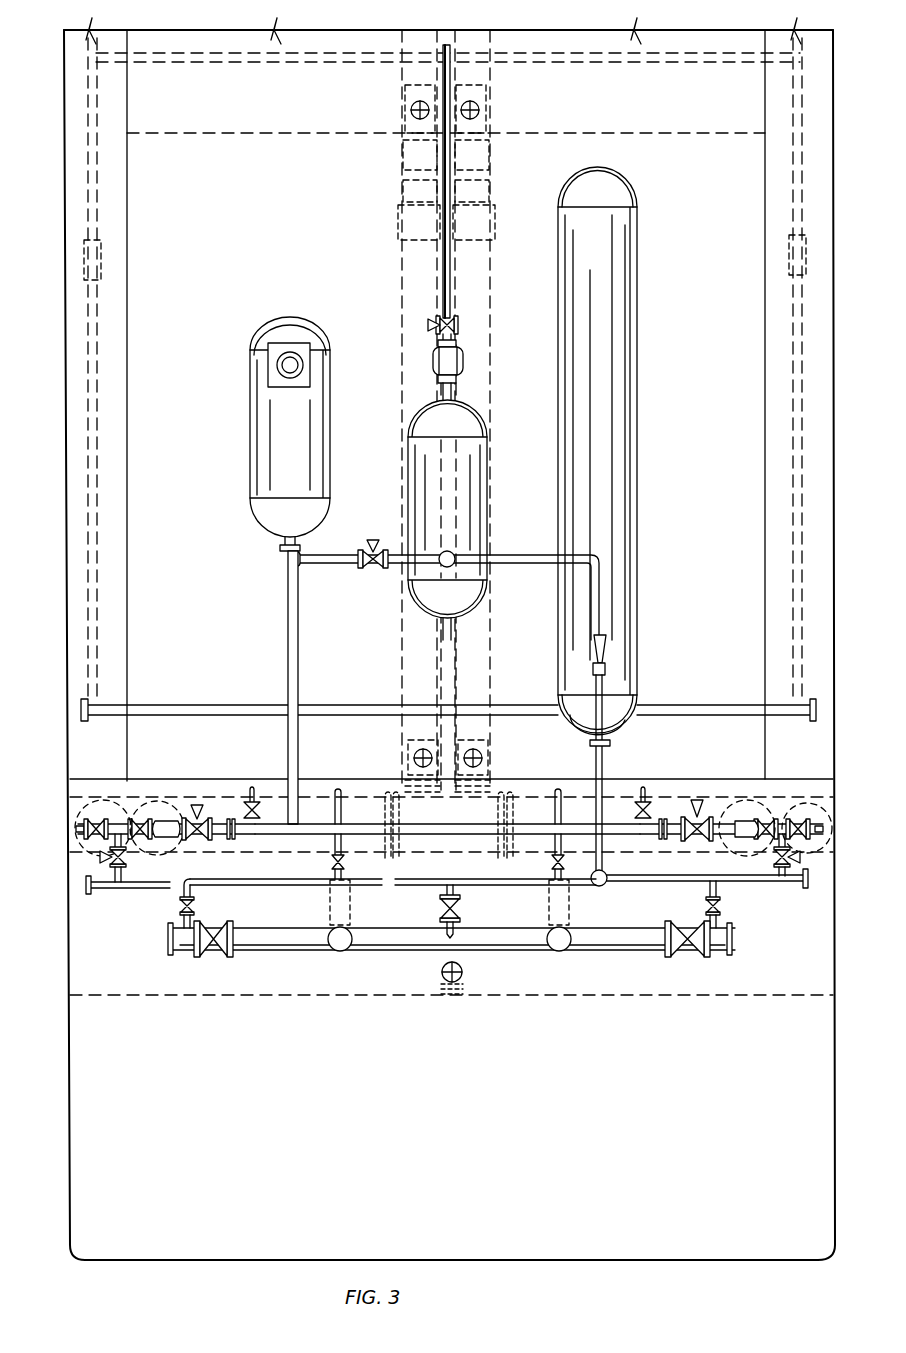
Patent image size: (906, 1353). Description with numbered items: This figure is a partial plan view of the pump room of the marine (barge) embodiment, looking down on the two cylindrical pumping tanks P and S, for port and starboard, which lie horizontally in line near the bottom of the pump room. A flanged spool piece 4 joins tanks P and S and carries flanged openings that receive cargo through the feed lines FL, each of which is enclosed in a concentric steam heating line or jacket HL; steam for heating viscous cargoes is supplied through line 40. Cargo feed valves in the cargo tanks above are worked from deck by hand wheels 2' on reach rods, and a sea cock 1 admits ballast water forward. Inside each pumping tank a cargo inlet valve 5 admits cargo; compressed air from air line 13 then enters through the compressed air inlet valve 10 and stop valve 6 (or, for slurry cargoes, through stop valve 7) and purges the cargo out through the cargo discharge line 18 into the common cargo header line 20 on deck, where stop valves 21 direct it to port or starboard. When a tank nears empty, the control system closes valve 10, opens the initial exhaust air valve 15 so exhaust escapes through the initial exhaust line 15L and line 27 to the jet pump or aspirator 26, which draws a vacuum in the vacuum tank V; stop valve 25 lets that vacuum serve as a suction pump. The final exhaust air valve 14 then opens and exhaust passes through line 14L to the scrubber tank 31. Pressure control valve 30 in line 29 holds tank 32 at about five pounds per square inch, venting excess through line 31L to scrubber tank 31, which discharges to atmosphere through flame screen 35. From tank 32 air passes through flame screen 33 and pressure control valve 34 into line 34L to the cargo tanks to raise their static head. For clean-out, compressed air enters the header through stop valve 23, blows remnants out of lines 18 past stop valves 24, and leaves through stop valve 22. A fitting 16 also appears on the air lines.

The sea cock 1 is at (461, 976).
The hand wheel 2' is at (443, 427).
The flanged spool piece 4 is at (113, 967).
The cargo inlet valve 5 is at (822, 372).
The stop valve 6 is at (137, 816).
The stop valve 7 is at (93, 818).
The compressed air inlet valve 10 is at (127, 860).
The air line 13 is at (88, 882).
The final exhaust air valve 14 is at (700, 815).
The final exhaust line 14L is at (474, 828).
The initial exhaust air valve 15 is at (198, 805).
The initial exhaust line 15L is at (245, 836).
The flange coupling 16 is at (228, 818).
The cargo discharge line 18 is at (330, 906).
The cargo header line 20 is at (425, 930).
The stop valve 21 is at (216, 926).
The stop valve 22 is at (180, 905).
The stop valve 23 is at (461, 910).
The stop valve 24 is at (331, 860).
The stop valve 25 is at (258, 800).
The jet pump or aspirator 26 is at (607, 648).
The line 27 is at (618, 725).
The line 29 is at (505, 558).
The pressure control valve 30 is at (373, 540).
The scrubber tank 31 is at (250, 418).
The line 31L is at (288, 633).
The tank 32 is at (483, 480).
The flame screen 33 is at (465, 357).
The pressure control valve 34 is at (428, 325).
The line 34L is at (455, 267).
The flame screen 35 is at (276, 366).
The steam line 40 is at (183, 62).
The vacuum tank V is at (608, 450).
The starboard pumping tank S is at (129, 828).
The port pumping tank P is at (775, 826).
The cargo feed line FL is at (490, 172).
The steam heating line or jacket HL is at (490, 191).